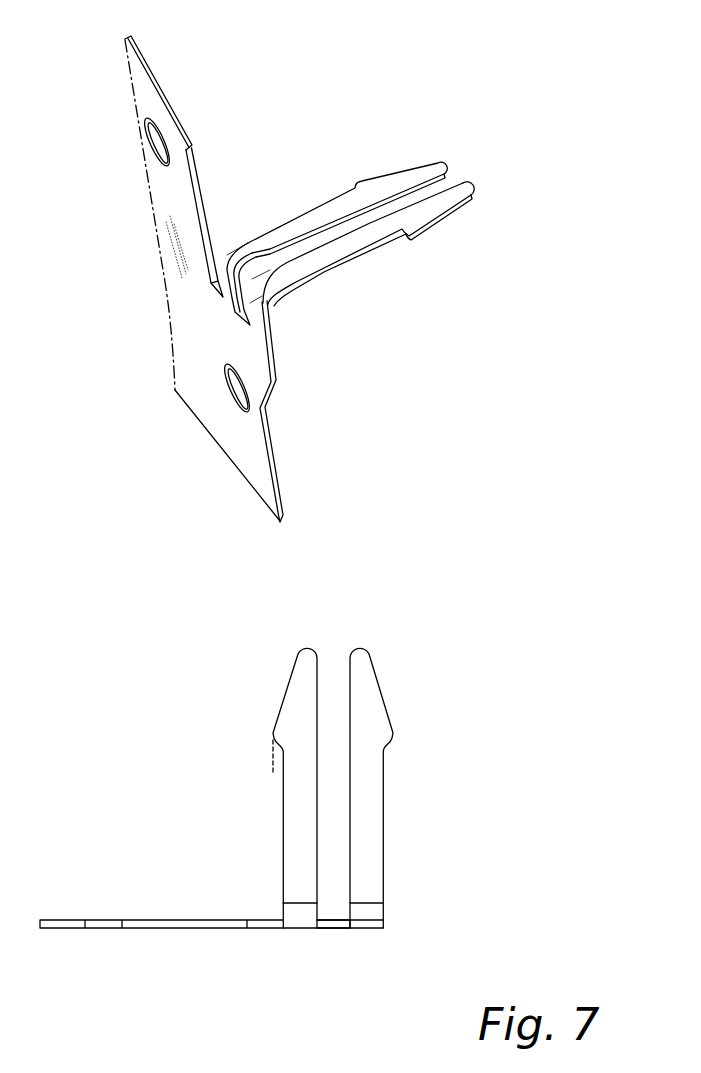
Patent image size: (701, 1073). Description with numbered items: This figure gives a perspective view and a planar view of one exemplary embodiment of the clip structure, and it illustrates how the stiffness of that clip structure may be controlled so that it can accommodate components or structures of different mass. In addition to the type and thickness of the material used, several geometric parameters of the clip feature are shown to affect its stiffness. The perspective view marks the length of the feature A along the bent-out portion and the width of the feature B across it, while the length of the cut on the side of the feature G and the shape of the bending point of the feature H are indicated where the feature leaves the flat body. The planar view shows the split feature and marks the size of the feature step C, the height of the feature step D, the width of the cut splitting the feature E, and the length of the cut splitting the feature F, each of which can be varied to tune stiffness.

The length of the feature A is at (495, 227).
The width of the feature B is at (443, 142).
The size of the feature step C is at (310, 765).
The height of the feature step D is at (387, 745).
The width of the cut splitting the feature E is at (350, 715).
The length of the cut splitting the feature F is at (435, 920).
The length of the cut on the side of the feature G is at (204, 267).
The shape of the bending point of the feature H is at (226, 249).